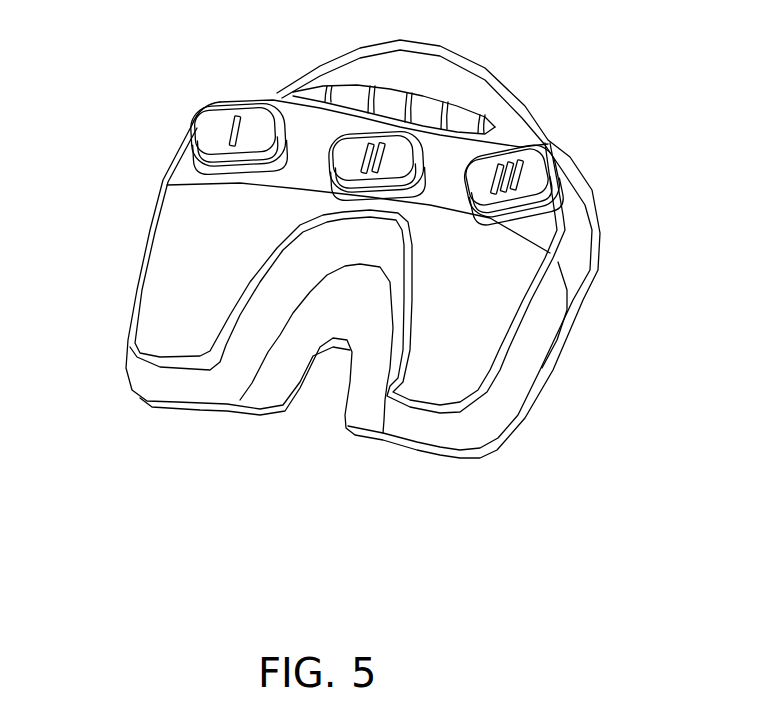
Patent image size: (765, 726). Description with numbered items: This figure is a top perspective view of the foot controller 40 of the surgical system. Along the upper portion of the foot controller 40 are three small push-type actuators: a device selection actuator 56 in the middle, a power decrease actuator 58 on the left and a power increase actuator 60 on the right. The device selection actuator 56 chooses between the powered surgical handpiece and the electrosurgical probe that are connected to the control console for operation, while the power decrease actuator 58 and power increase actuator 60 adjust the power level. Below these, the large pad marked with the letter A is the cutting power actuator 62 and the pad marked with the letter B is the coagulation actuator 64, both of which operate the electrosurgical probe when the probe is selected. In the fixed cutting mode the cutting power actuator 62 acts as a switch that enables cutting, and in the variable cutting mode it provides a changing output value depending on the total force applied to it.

The foot controller 40 is at (600, 423).
The device selection actuator 56 is at (405, 158).
The power decrease actuator 58 is at (217, 128).
The power increase actuator 60 is at (532, 188).
The cutting power actuator 62 is at (177, 252).
The coagulation actuator 64 is at (497, 305).